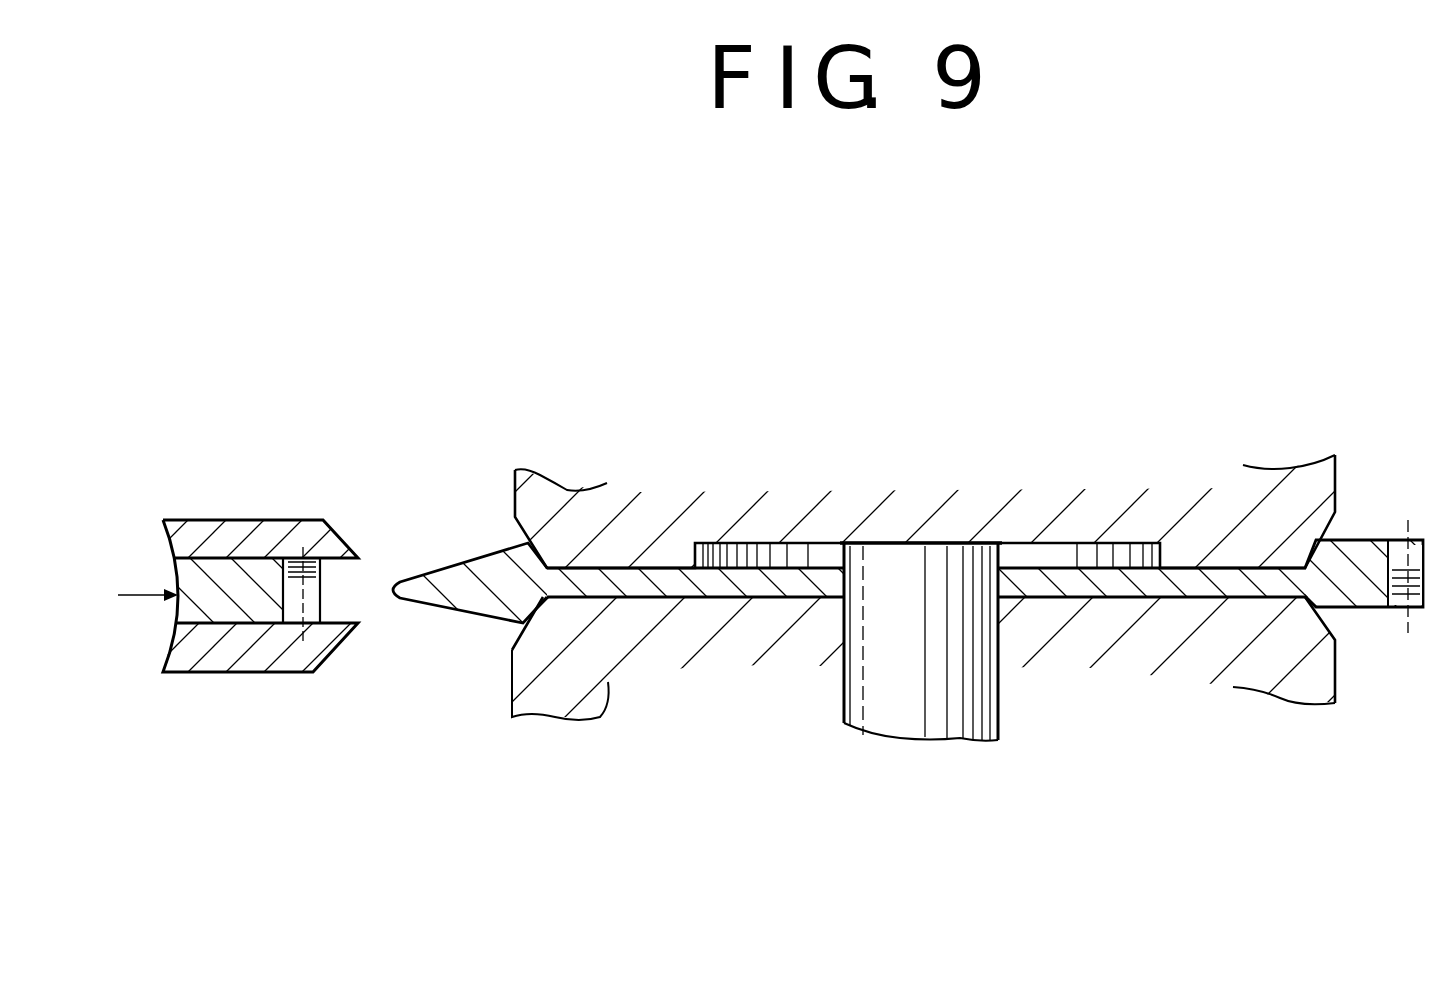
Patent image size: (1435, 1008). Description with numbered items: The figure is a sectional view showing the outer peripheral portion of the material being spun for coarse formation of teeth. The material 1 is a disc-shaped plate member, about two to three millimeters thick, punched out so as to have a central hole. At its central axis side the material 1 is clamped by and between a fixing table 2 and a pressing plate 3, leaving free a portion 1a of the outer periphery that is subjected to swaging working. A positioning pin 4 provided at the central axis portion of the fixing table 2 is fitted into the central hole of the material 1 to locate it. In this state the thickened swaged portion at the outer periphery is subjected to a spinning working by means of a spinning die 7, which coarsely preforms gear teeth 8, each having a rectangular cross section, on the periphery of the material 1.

The material 1 is at (908, 576).
The portion of the outer periphery 1a is at (463, 597).
The fixing table 2 is at (600, 717).
The pressing plate 3 is at (635, 517).
The positioning pin 4 is at (1000, 700).
The spinning die 7 is at (243, 520).
The gear teeth 8 is at (1395, 540).